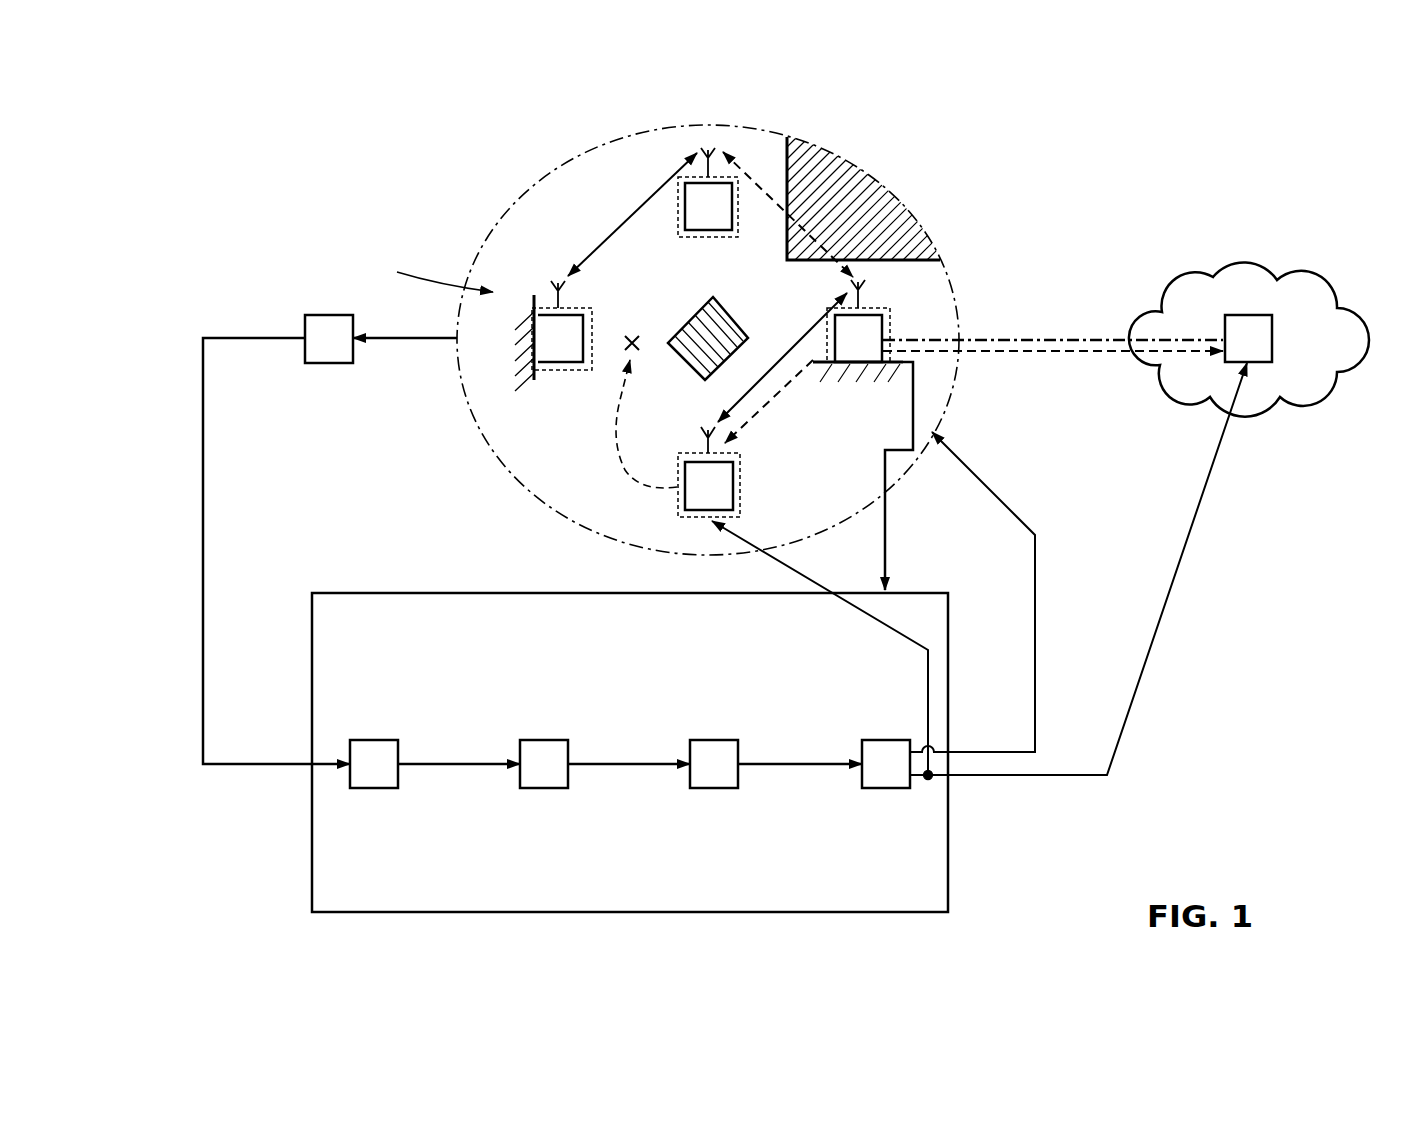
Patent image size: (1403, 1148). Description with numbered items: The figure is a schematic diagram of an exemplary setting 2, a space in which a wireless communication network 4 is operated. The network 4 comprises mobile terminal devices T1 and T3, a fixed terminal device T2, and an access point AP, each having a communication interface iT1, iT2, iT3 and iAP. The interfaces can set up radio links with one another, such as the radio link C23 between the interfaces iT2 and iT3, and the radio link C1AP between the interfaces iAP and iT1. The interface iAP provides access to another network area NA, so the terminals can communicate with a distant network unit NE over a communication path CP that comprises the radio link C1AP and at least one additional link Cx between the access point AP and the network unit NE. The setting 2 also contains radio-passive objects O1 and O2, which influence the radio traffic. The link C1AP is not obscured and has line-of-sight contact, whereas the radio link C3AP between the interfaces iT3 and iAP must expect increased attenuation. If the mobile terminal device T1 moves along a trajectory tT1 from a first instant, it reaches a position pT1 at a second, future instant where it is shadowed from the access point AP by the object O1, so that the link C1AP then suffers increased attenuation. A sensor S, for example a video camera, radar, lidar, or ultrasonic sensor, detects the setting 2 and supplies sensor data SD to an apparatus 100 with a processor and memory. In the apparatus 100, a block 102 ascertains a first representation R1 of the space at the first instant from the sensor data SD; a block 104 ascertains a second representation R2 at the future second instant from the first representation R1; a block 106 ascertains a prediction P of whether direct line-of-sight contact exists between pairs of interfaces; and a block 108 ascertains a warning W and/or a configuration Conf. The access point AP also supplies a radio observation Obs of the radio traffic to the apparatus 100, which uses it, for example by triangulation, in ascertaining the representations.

The setting 2 is at (578, 155).
The wireless communication network 4 is at (435, 273).
The sensor S is at (332, 327).
The sensor data SD is at (203, 527).
The terminal device T2 is at (550, 336).
The communication interface iT2 is at (557, 353).
The mobile terminal device T3 is at (672, 196).
The communication interface iT3 is at (698, 198).
The radio link C23 is at (635, 208).
The radio link C3AP is at (753, 178).
The radio-passive object O1 is at (727, 320).
The radio-passive object O2 is at (872, 192).
The position pT1 is at (632, 330).
The trajectory tT1 is at (620, 437).
The access point AP is at (921, 321).
The communication interface iAP is at (870, 335).
The radio link C1AP is at (770, 373).
The mobile terminal device T1 is at (706, 476).
The communication interface iT1 is at (685, 497).
The additional link Cx is at (1070, 337).
The communication path CP is at (1025, 353).
The network area NA is at (1249, 333).
The network unit NE is at (1257, 357).
The radio observation Obs is at (885, 535).
The configuration Conf is at (1035, 640).
The warning W is at (1168, 610).
The apparatus 100 is at (948, 865).
The block 102 is at (378, 748).
The block 104 is at (548, 748).
The block 106 is at (718, 748).
The block 108 is at (873, 748).
The first representation R1 is at (462, 770).
The second representation R2 is at (625, 770).
The prediction P is at (790, 770).